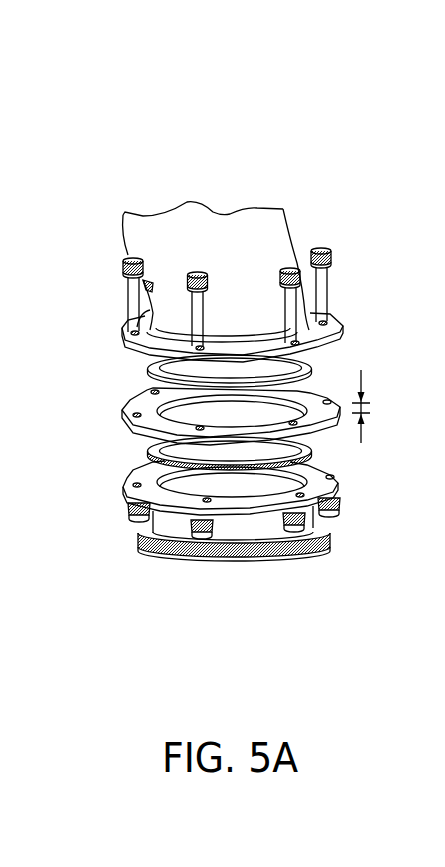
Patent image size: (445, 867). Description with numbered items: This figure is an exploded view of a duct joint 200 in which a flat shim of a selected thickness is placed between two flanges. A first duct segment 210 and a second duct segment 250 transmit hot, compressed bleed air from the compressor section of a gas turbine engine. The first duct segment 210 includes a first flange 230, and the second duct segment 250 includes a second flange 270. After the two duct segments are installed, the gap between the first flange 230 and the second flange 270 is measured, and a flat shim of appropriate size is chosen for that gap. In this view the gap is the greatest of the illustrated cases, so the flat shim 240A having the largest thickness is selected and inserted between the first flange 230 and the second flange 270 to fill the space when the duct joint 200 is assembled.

The duct joint 200 is at (271, 96).
The first duct segment 210 is at (138, 213).
The first flange 230 is at (313, 364).
The flat shim 240A is at (326, 395).
The second duct segment 250 is at (277, 558).
The second flange 270 is at (340, 499).